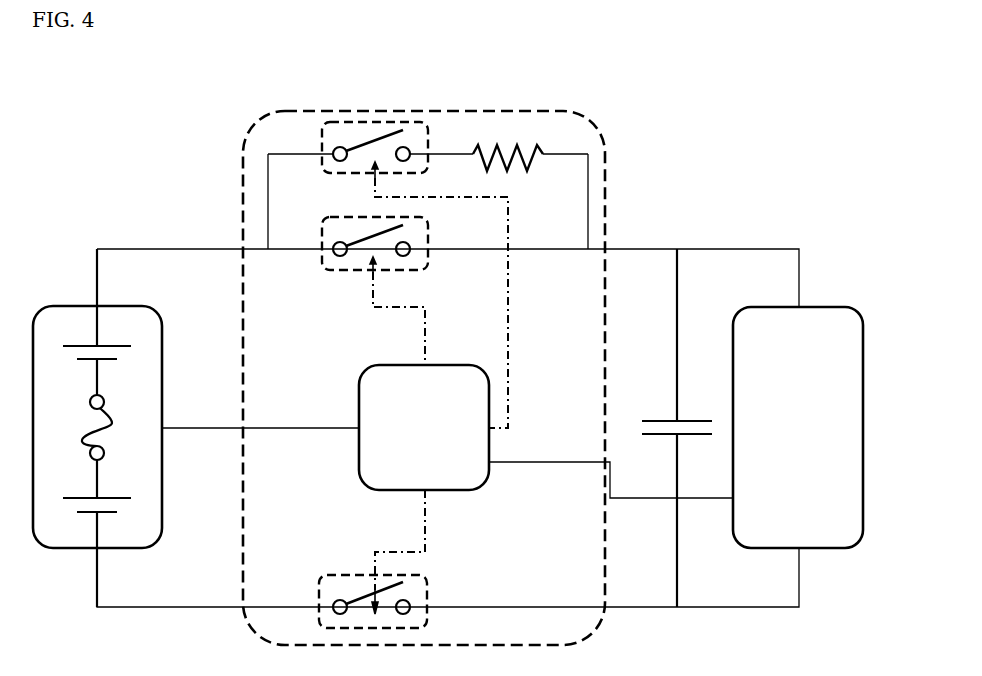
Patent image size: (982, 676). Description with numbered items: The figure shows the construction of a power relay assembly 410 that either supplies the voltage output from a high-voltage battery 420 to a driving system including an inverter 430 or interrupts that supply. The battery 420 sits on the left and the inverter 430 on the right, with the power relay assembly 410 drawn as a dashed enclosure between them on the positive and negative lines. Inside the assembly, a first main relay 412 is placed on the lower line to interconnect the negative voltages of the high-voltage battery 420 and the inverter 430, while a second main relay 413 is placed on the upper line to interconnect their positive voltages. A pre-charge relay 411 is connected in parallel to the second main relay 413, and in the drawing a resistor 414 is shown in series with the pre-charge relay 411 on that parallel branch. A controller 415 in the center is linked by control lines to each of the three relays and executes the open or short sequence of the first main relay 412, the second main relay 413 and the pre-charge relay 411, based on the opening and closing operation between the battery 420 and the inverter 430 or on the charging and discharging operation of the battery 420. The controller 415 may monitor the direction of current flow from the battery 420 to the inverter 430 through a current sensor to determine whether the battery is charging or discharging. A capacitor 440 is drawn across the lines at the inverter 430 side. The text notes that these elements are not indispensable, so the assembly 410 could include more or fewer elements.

The power relay assembly 410 is at (512, 112).
The pre-charge relay 411 is at (427, 145).
The first main relay 412 is at (425, 597).
The second main relay 413 is at (427, 240).
The resistor 414 is at (510, 168).
The controller 415 is at (490, 443).
The high-voltage battery 420 is at (127, 303).
The inverter 430 is at (820, 303).
The capacitor 440 is at (688, 417).